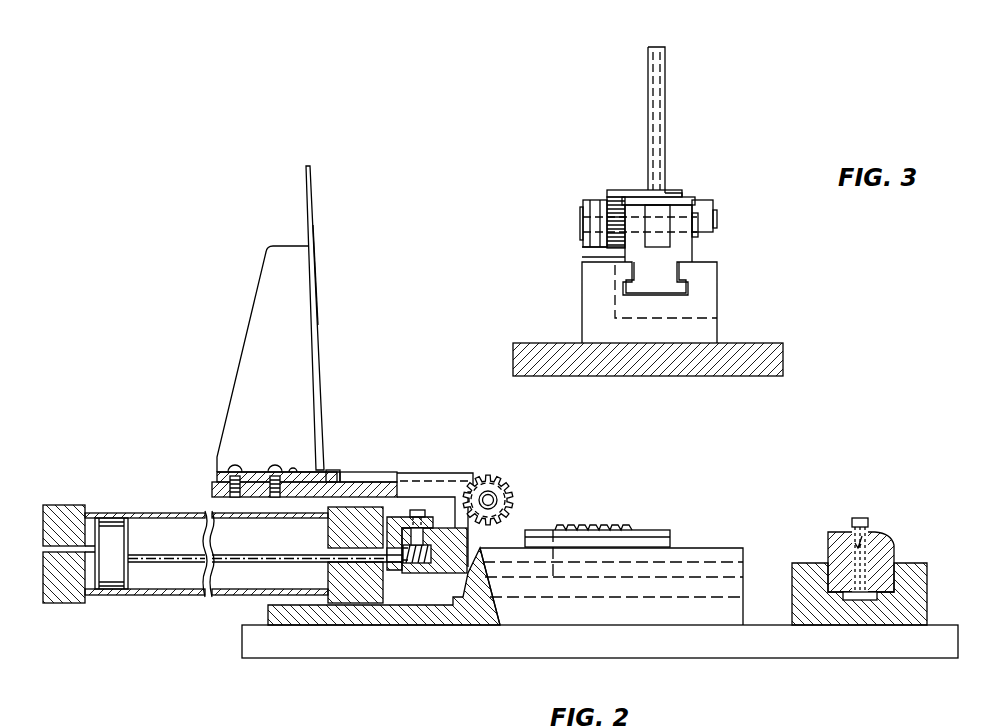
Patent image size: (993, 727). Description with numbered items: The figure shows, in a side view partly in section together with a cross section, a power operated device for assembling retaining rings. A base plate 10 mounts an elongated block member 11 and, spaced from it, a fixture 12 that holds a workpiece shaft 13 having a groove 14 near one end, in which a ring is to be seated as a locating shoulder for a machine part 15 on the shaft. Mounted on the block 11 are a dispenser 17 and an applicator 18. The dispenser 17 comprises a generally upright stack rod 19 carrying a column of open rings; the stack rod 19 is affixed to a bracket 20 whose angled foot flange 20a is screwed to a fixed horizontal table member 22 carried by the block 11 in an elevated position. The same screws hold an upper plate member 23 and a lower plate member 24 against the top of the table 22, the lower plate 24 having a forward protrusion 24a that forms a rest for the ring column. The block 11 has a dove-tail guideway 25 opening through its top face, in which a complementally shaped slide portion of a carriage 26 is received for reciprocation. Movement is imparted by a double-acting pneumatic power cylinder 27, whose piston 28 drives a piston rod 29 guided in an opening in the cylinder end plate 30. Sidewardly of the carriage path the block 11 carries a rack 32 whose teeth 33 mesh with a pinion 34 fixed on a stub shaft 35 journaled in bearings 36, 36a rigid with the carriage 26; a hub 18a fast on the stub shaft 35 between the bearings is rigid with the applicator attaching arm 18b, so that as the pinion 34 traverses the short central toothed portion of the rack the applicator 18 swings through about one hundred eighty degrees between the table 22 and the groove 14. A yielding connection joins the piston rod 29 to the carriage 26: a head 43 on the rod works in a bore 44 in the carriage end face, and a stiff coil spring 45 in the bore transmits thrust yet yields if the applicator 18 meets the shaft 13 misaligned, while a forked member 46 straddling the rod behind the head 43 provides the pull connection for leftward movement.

In FIG. 2, the base plate 10 is at (826, 648).
In FIG. 3, the base plate 10 is at (713, 376).
In FIG. 2, the block member 11 is at (467, 615).
In FIG. 3, the block member 11 is at (705, 302).
In FIG. 2, the fixture 12 is at (927, 590).
In FIG. 2, the shaft 13 is at (893, 541).
In FIG. 2, the groove 14 is at (867, 523).
In FIG. 2, the machine part 15 is at (894, 560).
In FIG. 2, the dispenser 17 is at (319, 322).
In FIG. 2, the applicator 18 is at (370, 472).
In FIG. 3, the hub 18a is at (665, 237).
In FIG. 2, the applicator attaching arm 18b is at (455, 478).
In FIG. 3, the applicator attaching arm 18b is at (672, 196).
In FIG. 2, the stack rod 19 is at (313, 230).
In FIG. 3, the stack rod 19 is at (665, 65).
In FIG. 2, the bracket 20 is at (270, 275).
In FIG. 2, the angled foot flange 20a is at (262, 466).
In FIG. 3, the angled foot flange 20a is at (628, 192).
In FIG. 2, the table member 22 is at (213, 490).
In FIG. 2, the upper plate member 23 is at (230, 476).
In FIG. 2, the lower plate member 24 is at (217, 480).
In FIG. 2, the protrusion 24a is at (328, 470).
In FIG. 2, the dove-tail guideway 25 is at (722, 565).
In FIG. 3, the dove-tail guideway 25 is at (682, 280).
In FIG. 2, the carriage 26 is at (690, 547).
In FIG. 3, the carriage 26 is at (697, 252).
In FIG. 2, the pneumatic power cylinder 27 is at (150, 597).
In FIG. 2, the piston 28 is at (113, 578).
In FIG. 2, the piston rod 29 is at (188, 555).
In FIG. 2, the cylinder end plate 30 is at (345, 600).
In FIG. 2, the rack 32 is at (665, 533).
In FIG. 2, the rack teeth 33 is at (628, 527).
In FIG. 2, the pinion 34 is at (512, 500).
In FIG. 3, the pinion 34 is at (597, 210).
In FIG. 2, the stub shaft 35 is at (490, 498).
In FIG. 3, the stub shaft 35 is at (700, 225).
In FIG. 3, the bearing 36 is at (688, 212).
In FIG. 3, the bearing 36a is at (640, 242).
In FIG. 2, the head 43 is at (400, 565).
In FIG. 2, the bore 44 is at (418, 573).
In FIG. 2, the coil spring 45 is at (422, 563).
In FIG. 2, the forked member 46 is at (413, 509).